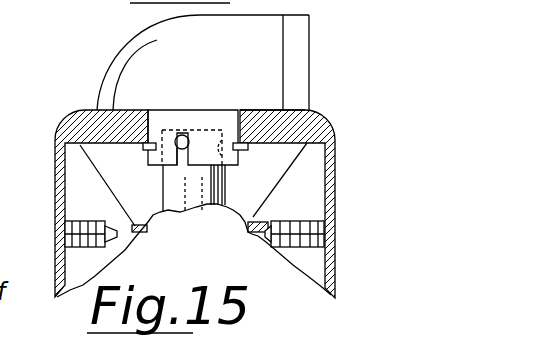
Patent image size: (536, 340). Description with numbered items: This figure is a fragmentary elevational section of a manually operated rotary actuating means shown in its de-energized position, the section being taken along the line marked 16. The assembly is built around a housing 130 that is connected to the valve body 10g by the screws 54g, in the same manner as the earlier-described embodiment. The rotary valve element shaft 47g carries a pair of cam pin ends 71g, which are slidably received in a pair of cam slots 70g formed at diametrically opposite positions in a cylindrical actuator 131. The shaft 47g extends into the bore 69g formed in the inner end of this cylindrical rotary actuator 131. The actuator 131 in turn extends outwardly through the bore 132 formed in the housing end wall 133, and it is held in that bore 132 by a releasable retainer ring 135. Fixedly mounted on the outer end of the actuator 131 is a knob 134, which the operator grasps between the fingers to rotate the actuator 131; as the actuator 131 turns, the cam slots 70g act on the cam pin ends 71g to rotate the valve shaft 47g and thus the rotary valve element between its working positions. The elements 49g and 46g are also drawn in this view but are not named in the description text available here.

The section line 16- 16 is at (80, 13).
The housing 130 is at (340, 144).
The housing top wall 133 is at (316, 118).
The pipe 134 is at (116, 58).
The central block 132 is at (242, 128).
The ball 71g is at (183, 134).
The slot 70g is at (180, 158).
The clip 131 is at (148, 157).
The clip 135 is at (248, 149).
The rod 69g is at (226, 166).
The link 49g is at (280, 172).
The retainer clip 46g is at (143, 233).
The screw 54g is at (58, 227).
The contoured surface 10g is at (298, 265).
The guide surface 47g is at (200, 207).